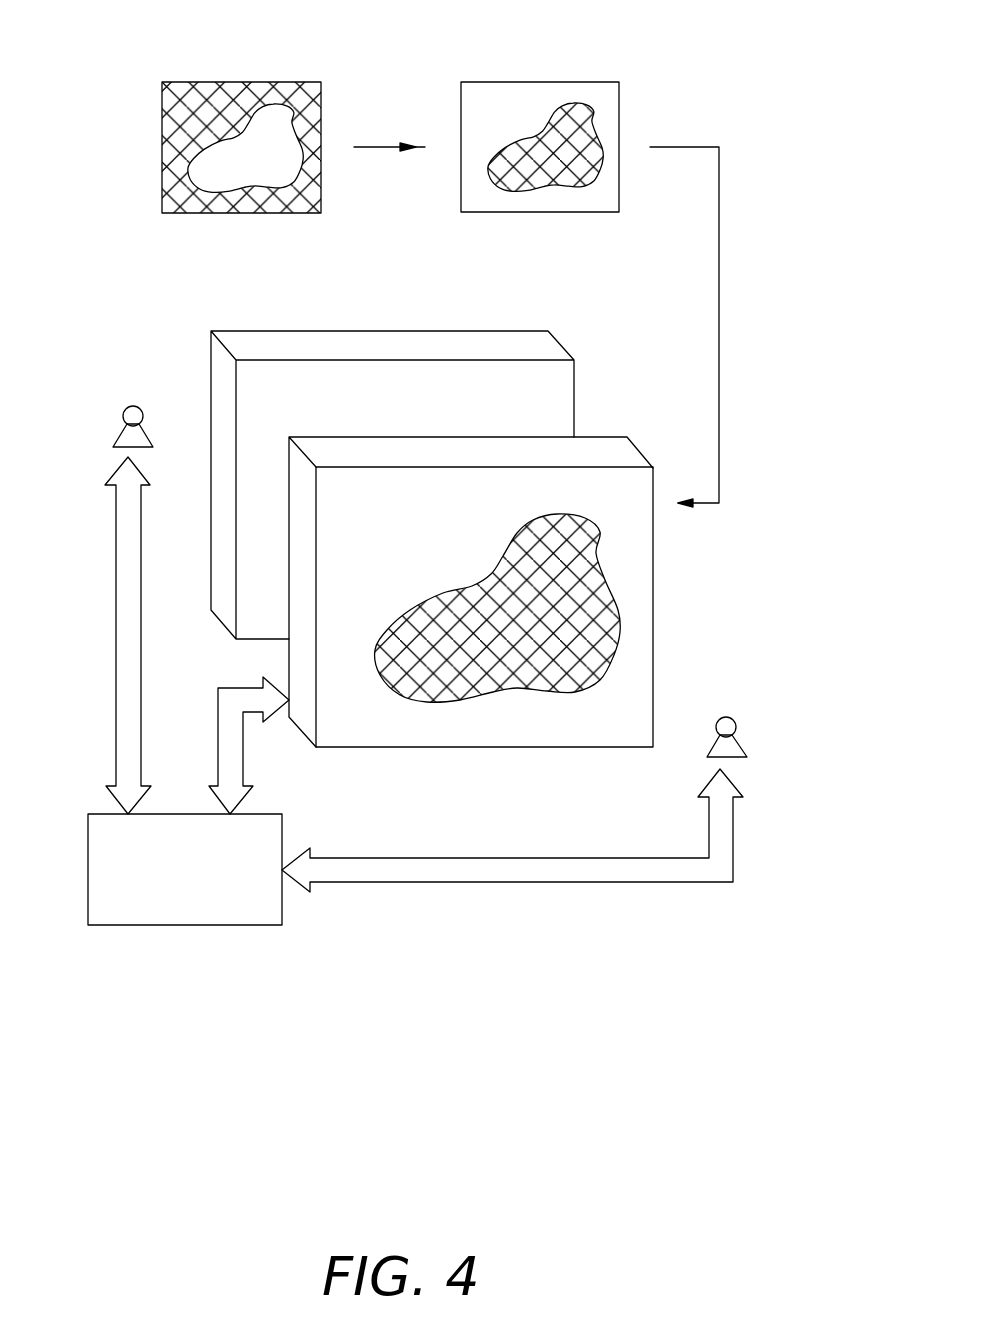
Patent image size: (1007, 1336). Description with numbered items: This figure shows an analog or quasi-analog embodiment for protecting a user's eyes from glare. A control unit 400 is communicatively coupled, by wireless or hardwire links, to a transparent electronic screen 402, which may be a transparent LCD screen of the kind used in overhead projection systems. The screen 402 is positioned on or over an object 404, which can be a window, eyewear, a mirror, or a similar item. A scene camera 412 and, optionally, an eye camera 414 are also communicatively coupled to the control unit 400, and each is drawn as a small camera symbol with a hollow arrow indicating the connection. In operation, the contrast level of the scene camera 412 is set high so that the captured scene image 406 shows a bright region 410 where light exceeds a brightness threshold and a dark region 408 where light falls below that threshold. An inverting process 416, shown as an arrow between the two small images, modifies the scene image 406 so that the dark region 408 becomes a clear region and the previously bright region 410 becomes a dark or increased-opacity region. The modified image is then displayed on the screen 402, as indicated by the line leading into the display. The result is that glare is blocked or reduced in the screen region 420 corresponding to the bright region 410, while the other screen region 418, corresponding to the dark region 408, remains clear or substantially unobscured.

The control unit 400 is at (282, 826).
The transparent electronic screen 402 is at (655, 600).
The object 404 is at (336, 341).
The scene image 406 is at (263, 63).
The dark region 408 is at (177, 104).
The bright region 410 is at (218, 180).
The scene camera 412 is at (737, 727).
The eye camera 414 is at (136, 405).
The inverting process 416 is at (387, 148).
The clear screen region 418 is at (644, 536).
The glare-blocking screen region 420 is at (525, 690).